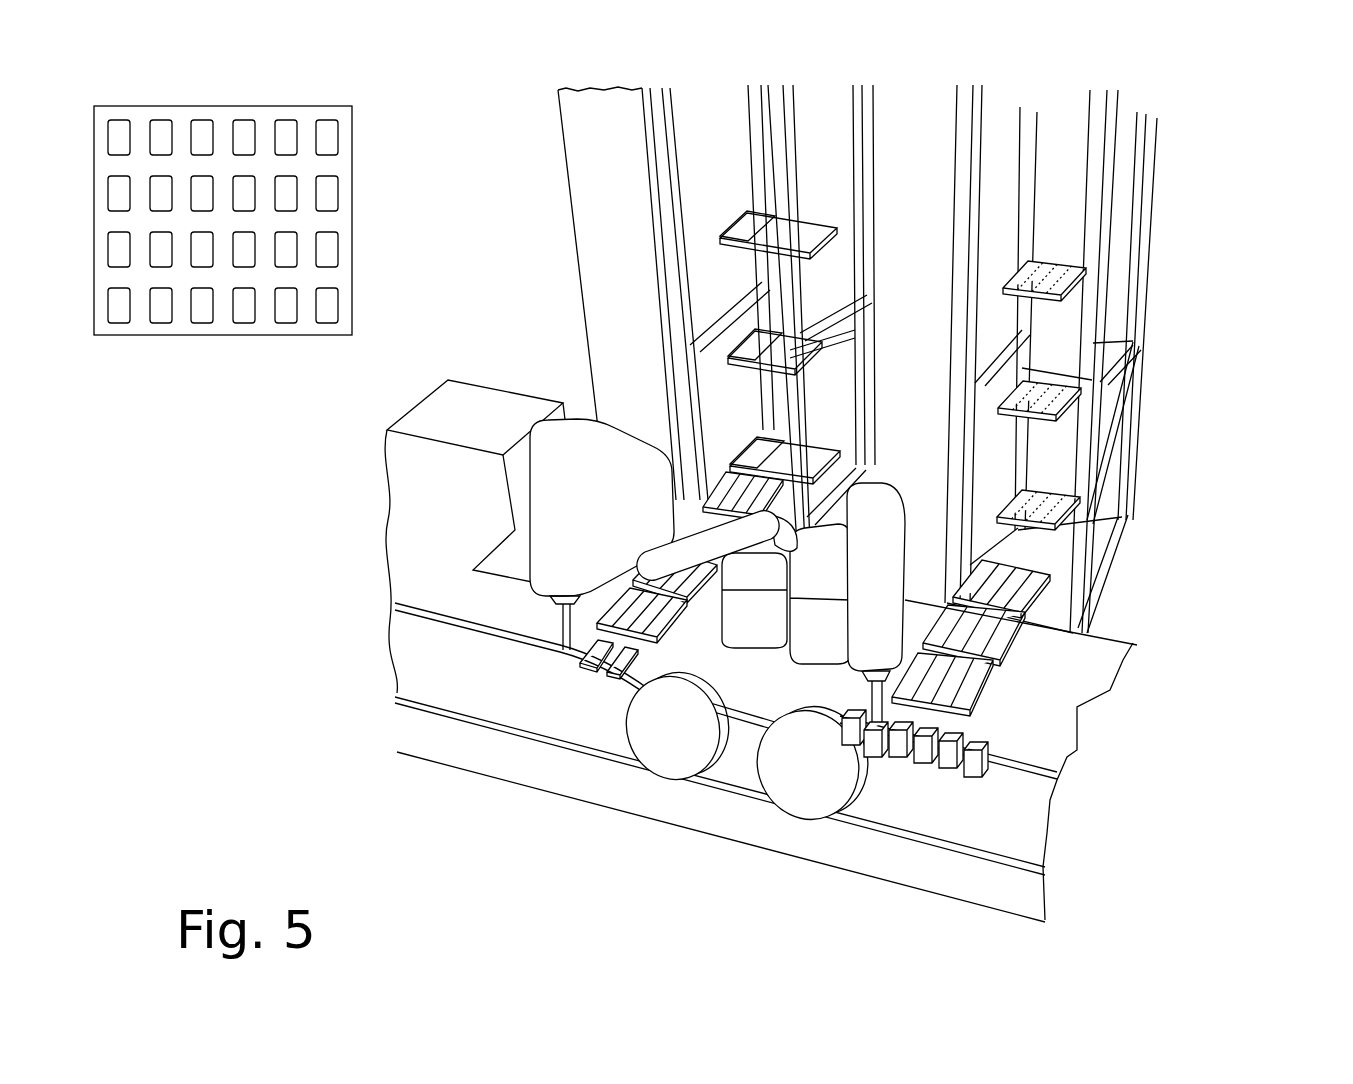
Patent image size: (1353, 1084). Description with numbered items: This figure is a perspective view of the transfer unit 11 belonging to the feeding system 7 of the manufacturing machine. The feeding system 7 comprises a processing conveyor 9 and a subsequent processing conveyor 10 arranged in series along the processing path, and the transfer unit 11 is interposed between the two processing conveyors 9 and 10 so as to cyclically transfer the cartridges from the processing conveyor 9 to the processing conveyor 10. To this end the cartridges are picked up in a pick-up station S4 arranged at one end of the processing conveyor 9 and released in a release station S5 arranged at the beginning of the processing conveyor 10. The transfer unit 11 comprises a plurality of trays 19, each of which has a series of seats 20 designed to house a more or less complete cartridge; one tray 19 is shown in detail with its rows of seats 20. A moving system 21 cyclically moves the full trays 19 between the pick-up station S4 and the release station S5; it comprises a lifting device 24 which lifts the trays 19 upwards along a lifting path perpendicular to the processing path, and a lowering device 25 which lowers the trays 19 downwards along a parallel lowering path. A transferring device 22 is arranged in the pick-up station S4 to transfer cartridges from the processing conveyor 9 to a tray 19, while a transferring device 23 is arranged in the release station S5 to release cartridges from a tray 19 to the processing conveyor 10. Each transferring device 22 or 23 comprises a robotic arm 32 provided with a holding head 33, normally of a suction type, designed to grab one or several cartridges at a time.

The feeding system 7 is at (685, 866).
The processing conveyor 9 is at (1063, 826).
The processing conveyor 10 is at (383, 655).
The transfer unit 11 is at (460, 100).
The tray 19 is at (207, 352).
The seat 20 is at (328, 246).
The moving system 21 is at (1187, 540).
The transferring device 22 is at (893, 468).
The transferring device 23 is at (542, 390).
The lifting device 24 is at (1165, 282).
The lowering device 25 is at (530, 155).
The robotic arm 32 is at (607, 487).
The holding head 33 is at (572, 612).
The pick-up station S4 is at (906, 773).
The release station S5 is at (590, 683).